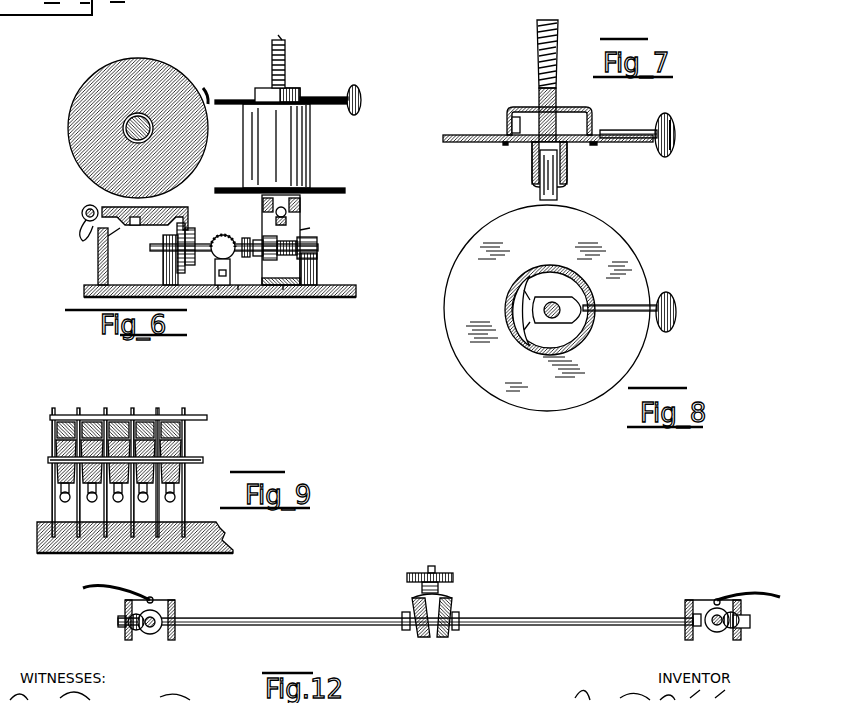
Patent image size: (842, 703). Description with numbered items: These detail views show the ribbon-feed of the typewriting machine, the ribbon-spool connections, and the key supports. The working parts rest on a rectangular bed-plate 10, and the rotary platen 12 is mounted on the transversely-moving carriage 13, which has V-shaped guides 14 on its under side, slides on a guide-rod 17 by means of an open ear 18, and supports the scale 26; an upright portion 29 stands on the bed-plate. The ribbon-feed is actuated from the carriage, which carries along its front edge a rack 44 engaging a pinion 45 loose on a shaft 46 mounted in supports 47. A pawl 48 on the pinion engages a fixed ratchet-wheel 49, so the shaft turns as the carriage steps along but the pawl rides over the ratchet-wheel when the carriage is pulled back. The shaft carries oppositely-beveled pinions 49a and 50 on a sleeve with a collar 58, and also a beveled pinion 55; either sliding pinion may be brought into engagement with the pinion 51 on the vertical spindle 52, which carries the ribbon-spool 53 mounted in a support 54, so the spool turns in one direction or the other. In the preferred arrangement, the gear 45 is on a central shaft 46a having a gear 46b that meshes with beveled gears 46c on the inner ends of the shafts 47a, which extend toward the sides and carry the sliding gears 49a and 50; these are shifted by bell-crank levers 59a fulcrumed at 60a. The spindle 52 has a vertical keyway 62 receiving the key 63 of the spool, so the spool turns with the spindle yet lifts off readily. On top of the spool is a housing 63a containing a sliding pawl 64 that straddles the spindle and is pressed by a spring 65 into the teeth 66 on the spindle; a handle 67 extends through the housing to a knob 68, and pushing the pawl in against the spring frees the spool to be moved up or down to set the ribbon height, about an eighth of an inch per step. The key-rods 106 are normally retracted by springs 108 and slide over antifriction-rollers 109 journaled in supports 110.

In FIG. 6, the bed-plate 10 is at (340, 286).
In FIG. 9, the bed-plate 10 is at (214, 553).
In FIG. 6, the rotary platen 12 is at (70, 150).
In FIG. 6, the carriage 13 is at (178, 206).
In FIG. 6, the V-shaped guides 14 is at (168, 226).
In FIG. 6, the guide-rod 17 is at (82, 213).
In FIG. 6, the ear 18 is at (84, 206).
In FIG. 6, the scale 26 is at (206, 93).
In FIG. 6, the upright wall 29 is at (128, 228).
In FIG. 6, the rack 44 is at (182, 235).
In FIG. 6, the pinion 45 is at (193, 237).
In FIG. 12, the pinion 45 is at (453, 578).
In FIG. 6, the shaft 46 is at (246, 238).
In FIG. 12, the shaft 46a is at (436, 568).
In FIG. 12, the gear 46b is at (445, 603).
In FIG. 12, the beveled gears 46c is at (426, 632).
In FIG. 6, the supports 47 is at (318, 249).
In FIG. 12, the shafts 47a is at (588, 616).
In FIG. 6, the pawl 48 is at (223, 238).
In FIG. 12, the pawl 48 is at (420, 588).
In FIG. 6, the ratchet-wheel 49 is at (214, 266).
In FIG. 6, the beveled pinion 49a is at (283, 290).
In FIG. 12, the beveled pinion 49a is at (690, 640).
In FIG. 6, the beveled pinion 50 is at (298, 240).
In FIG. 12, the beveled pinion 50 is at (738, 630).
In FIG. 6, the pinion 51 is at (310, 230).
In FIG. 6, the spindle 52 is at (330, 190).
In FIG. 7, the spindle 52 is at (537, 192).
In FIG. 8, the spindle 52 is at (540, 330).
In FIG. 12, the spindle 52 is at (715, 633).
In FIG. 6, the ribbon-spool 53 is at (308, 172).
In FIG. 7, the ribbon-spool 53 is at (548, 148).
In FIG. 8, the ribbon-spool 53 is at (580, 223).
In FIG. 6, the support 54 is at (268, 210).
In FIG. 12, the support 54 is at (745, 630).
In FIG. 6, the beveled pinion 55 is at (220, 290).
In FIG. 6, the collar 58 is at (238, 290).
In FIG. 12, the bell-crank lever 59a is at (755, 593).
In FIG. 12, the fulcrum 60a is at (718, 598).
In FIG. 7, the keyway 62 is at (557, 92).
In FIG. 6, the key 63 is at (298, 91).
In FIG. 7, the key 63 is at (566, 157).
In FIG. 7, the housing 63a is at (561, 120).
In FIG. 8, the housing 63a is at (592, 284).
In FIG. 8, the sliding pawl 64 is at (550, 295).
In FIG. 7, the spring 65 is at (513, 123).
In FIG. 8, the spring 65 is at (520, 308).
In FIG. 6, the teeth 66 is at (288, 63).
In FIG. 7, the teeth 66 is at (539, 72).
In FIG. 6, the handle 67 is at (330, 93).
In FIG. 7, the handle 67 is at (615, 132).
In FIG. 8, the handle 67 is at (635, 305).
In FIG. 6, the knob 68 is at (361, 96).
In FIG. 7, the knob 68 is at (665, 135).
In FIG. 8, the knob 68 is at (677, 328).
In FIG. 9, the key-rods 106 is at (172, 425).
In FIG. 9, the springs 108 is at (175, 497).
In FIG. 9, the antifriction-rollers 109 is at (188, 457).
In FIG. 9, the supports 110 is at (52, 495).